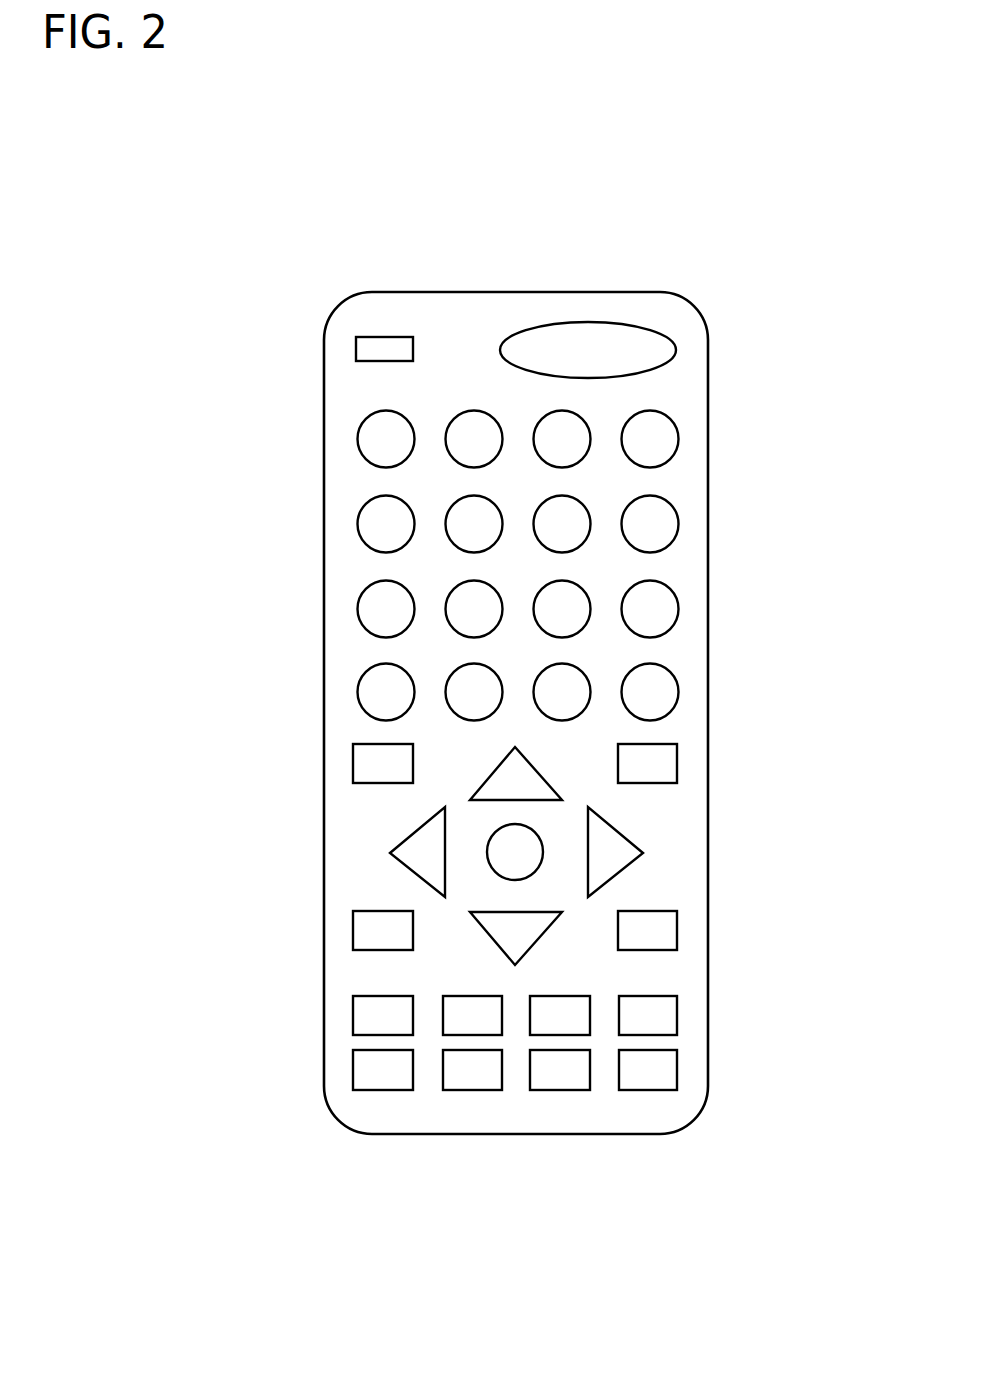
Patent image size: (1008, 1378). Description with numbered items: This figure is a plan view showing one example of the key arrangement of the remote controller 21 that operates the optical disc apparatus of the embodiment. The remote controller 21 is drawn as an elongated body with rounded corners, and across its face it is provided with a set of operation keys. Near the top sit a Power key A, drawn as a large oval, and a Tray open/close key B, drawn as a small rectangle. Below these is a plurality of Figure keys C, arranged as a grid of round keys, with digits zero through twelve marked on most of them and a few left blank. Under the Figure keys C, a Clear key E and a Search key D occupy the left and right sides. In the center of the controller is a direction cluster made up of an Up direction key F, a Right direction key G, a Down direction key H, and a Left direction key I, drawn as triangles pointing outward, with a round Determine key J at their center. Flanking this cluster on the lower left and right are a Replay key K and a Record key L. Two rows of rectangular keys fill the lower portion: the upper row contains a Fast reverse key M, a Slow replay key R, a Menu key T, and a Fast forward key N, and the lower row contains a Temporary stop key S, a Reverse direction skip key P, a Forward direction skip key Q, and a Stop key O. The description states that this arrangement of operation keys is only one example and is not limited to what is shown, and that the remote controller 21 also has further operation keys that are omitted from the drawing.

The remote controller 21 is at (455, 292).
The Power key A is at (603, 323).
The Tray open/close key B is at (384, 337).
The Figure keys C is at (683, 486).
The Search key D is at (677, 758).
The Clear key E is at (353, 768).
The Up direction key F is at (543, 778).
The Right direction key G is at (630, 864).
The Down direction key H is at (546, 930).
The Left direction key I is at (417, 830).
The Determine key J is at (494, 871).
The Replay key K is at (353, 930).
The Record key L is at (677, 931).
The Fast reverse key M is at (353, 1016).
The Fast forward key N is at (677, 1017).
The Stop key O is at (650, 1090).
The Reverse direction skip key P is at (468, 1090).
The Forward direction skip key Q is at (557, 1090).
The Slow replay key R is at (482, 996).
The Temporary stop key S is at (375, 1090).
The Menu key T is at (553, 996).